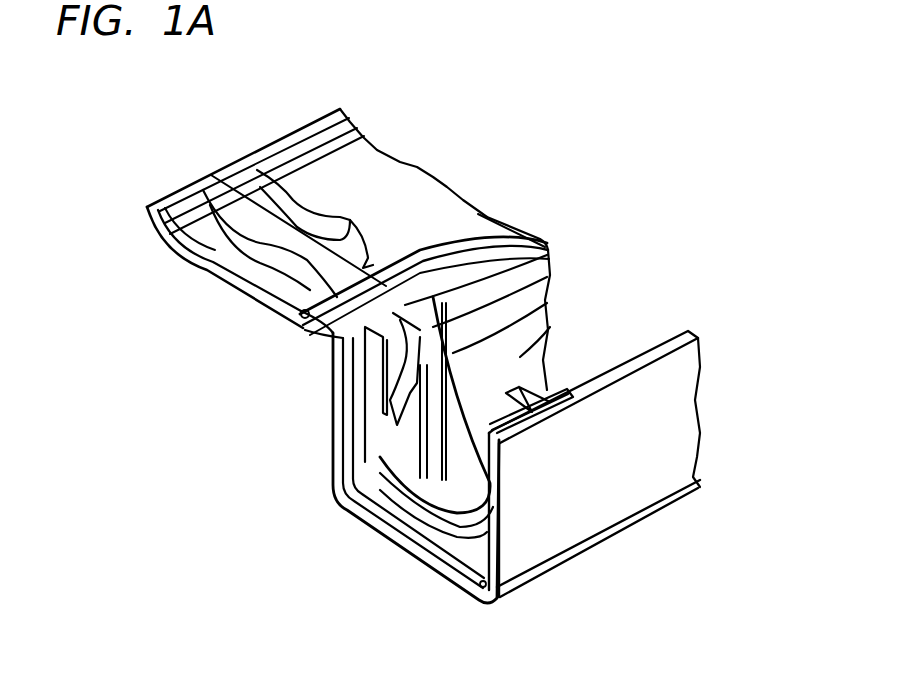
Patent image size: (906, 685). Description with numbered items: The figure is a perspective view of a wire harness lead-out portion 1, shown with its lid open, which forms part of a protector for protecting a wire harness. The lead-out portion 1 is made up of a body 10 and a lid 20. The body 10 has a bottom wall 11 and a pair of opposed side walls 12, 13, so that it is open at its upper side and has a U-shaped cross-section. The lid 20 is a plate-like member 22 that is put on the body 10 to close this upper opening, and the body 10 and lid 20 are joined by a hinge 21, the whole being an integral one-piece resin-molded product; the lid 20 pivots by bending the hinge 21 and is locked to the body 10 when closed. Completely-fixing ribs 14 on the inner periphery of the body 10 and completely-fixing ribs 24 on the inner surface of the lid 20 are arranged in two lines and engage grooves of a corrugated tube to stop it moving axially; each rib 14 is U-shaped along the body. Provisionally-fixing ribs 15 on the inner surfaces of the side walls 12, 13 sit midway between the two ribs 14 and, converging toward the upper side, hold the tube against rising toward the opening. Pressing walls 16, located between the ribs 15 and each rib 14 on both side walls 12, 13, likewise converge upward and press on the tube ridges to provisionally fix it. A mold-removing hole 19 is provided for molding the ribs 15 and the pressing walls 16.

The wire harness lead-out portion 1 is at (556, 222).
The body 10 is at (707, 333).
The bottom wall 11 is at (437, 563).
The side wall 12 is at (537, 533).
The side wall 13 is at (337, 443).
The completely-fixing rib 14 is at (543, 397).
The provisionally-fixing rib 15 is at (550, 303).
The pressing wall 16 is at (393, 347).
The mold-removing hole 19 is at (417, 480).
The lid 20 is at (448, 182).
The hinge 21 is at (340, 330).
The plate-like member 22 is at (373, 167).
The completely-fixing rib 24 is at (300, 218).